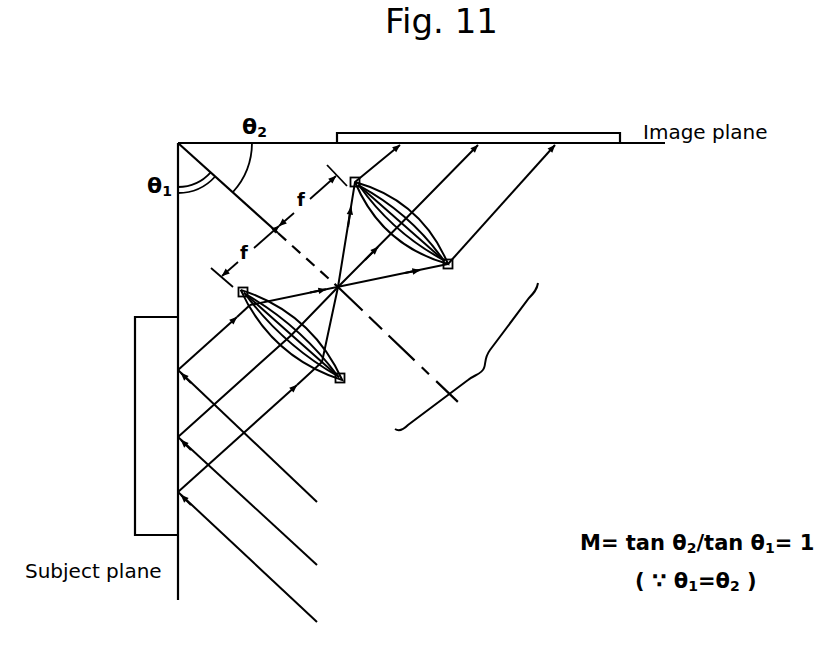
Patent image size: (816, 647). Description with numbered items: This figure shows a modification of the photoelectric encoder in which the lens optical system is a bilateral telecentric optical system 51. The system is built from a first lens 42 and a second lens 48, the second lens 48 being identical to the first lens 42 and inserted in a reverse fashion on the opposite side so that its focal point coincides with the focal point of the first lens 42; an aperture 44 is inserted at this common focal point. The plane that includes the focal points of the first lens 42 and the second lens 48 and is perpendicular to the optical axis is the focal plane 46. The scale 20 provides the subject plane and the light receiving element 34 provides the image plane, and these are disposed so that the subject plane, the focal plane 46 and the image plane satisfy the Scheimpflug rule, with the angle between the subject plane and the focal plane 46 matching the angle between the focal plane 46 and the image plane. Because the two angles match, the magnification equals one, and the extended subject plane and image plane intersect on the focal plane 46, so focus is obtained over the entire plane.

The scale 20 is at (134, 493).
The light receiving element 34 is at (539, 134).
The first lens 42 is at (344, 380).
The aperture 44 is at (364, 308).
The focal plane 46 is at (490, 368).
The second lens 48 is at (451, 268).
The bilateral telecentric optical system 51 is at (466, 356).